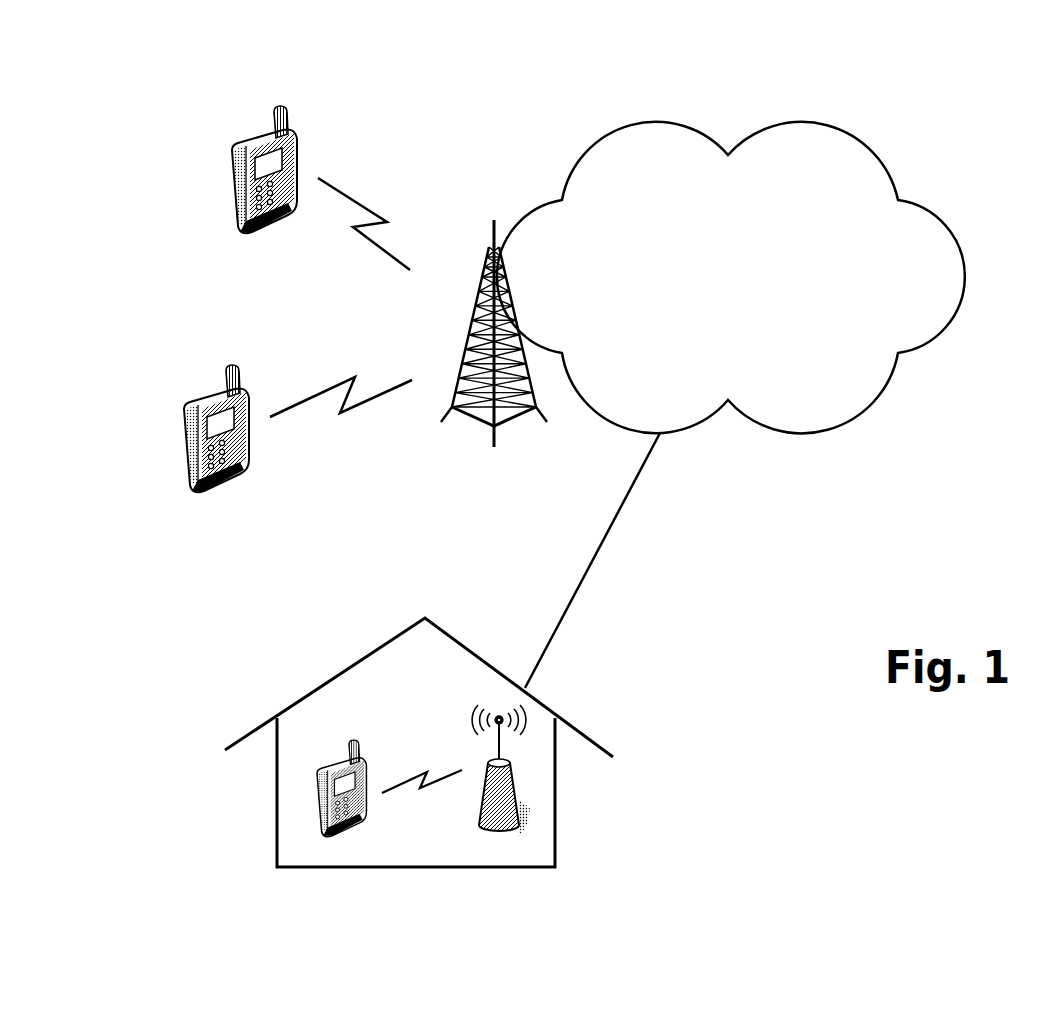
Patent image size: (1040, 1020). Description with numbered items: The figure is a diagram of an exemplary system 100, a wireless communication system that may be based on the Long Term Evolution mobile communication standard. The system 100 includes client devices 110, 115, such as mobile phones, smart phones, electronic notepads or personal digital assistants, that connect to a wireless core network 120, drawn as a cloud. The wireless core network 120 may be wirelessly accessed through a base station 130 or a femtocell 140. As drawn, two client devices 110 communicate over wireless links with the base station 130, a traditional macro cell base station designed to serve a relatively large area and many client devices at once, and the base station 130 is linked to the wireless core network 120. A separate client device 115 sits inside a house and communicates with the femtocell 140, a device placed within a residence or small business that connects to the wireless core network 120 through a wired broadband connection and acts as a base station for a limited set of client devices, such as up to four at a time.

The system 100 is at (197, 113).
The client devices 110 is at (294, 138).
The client device 115 is at (363, 737).
The wireless core network 120 is at (857, 306).
The base station 130 is at (476, 332).
The femtocell 140 is at (517, 817).